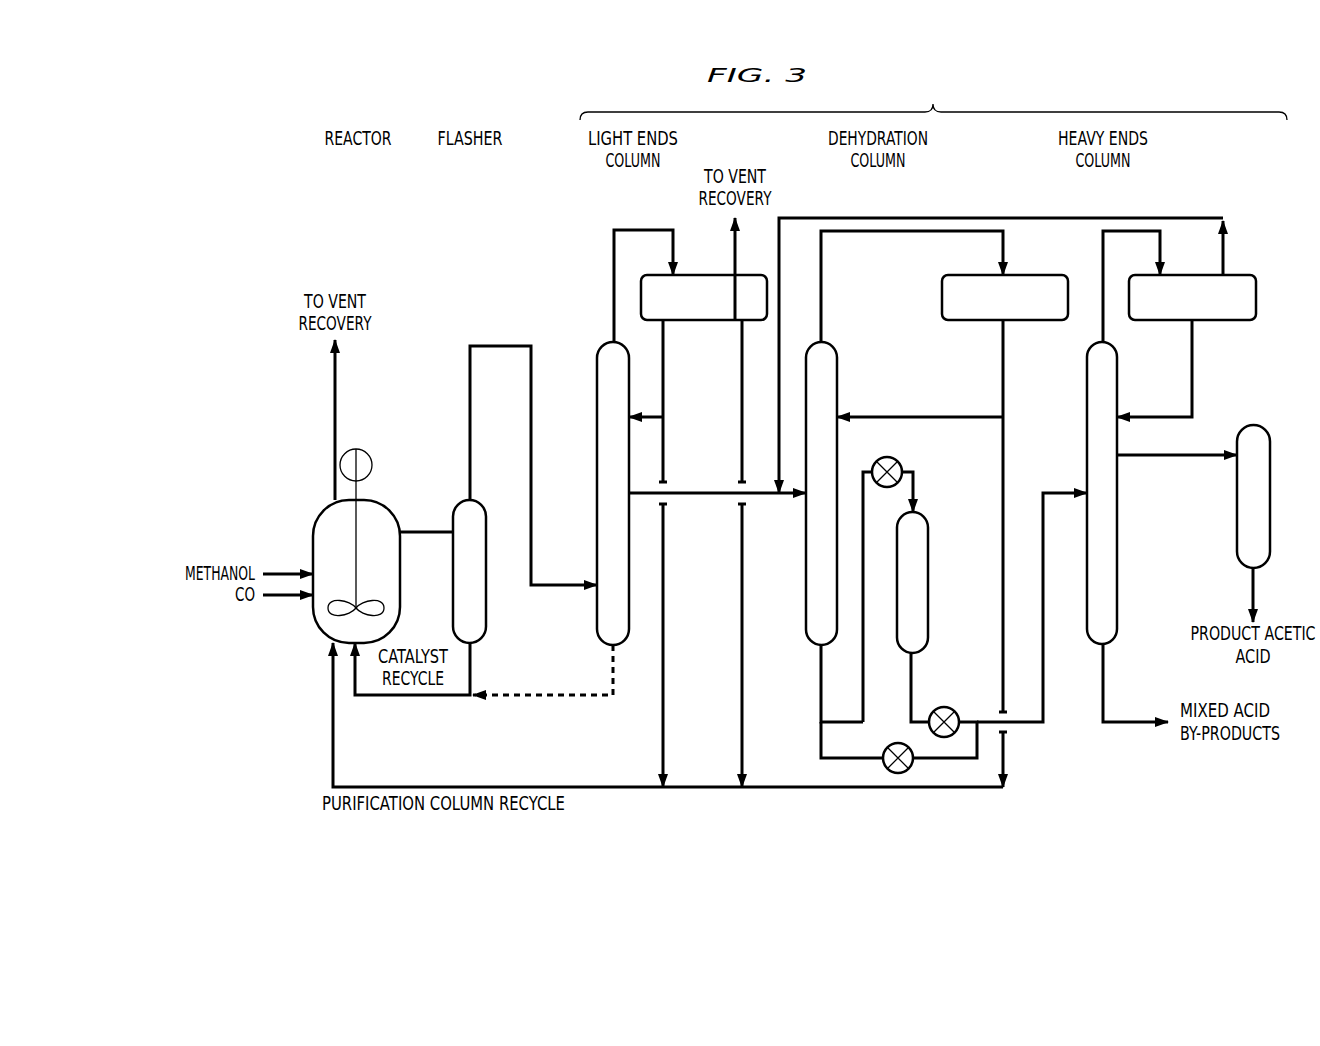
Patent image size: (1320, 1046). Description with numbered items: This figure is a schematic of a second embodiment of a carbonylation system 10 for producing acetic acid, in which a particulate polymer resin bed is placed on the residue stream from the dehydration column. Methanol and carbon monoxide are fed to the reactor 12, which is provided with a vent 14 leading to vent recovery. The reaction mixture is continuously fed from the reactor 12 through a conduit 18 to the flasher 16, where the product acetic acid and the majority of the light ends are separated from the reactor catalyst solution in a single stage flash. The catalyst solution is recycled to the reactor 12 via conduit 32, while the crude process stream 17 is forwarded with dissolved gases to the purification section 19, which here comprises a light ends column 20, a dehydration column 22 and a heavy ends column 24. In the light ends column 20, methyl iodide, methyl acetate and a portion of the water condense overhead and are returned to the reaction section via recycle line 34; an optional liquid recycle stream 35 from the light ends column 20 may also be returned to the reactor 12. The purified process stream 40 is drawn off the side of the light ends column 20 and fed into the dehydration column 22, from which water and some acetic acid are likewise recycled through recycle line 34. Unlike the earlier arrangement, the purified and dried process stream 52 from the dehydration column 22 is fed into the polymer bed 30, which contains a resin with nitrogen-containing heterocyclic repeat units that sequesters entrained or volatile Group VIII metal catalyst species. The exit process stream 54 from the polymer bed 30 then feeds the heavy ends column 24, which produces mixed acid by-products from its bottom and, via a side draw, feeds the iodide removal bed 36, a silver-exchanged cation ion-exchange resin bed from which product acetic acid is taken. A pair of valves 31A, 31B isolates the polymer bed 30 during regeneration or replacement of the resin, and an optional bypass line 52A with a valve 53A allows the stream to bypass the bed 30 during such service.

The carbonylation system 10 is at (340, 258).
The reactor 12 is at (313, 557).
The vent 14 is at (335, 425).
The flasher 16 is at (486, 613).
The crude process stream 17 is at (486, 346).
The conduit 18 is at (422, 530).
The purification section 19 is at (933, 100).
The light ends column 20 is at (597, 372).
The dehydration column 22 is at (828, 386).
The heavy ends column 24 is at (1112, 550).
The polymer bed 30 is at (930, 568).
The valve 31A is at (900, 462).
The valve 31B is at (945, 707).
The conduit 32 is at (383, 698).
The recycle line 34 is at (600, 790).
The liquid recycle stream 35 is at (556, 695).
The iodide removal bed 36 is at (1262, 465).
The purified process stream 40 is at (705, 492).
The purified and dried process stream 52 is at (817, 683).
The bypass line 52A is at (817, 745).
The valve 53A is at (890, 775).
The exit process stream 54 is at (1035, 726).